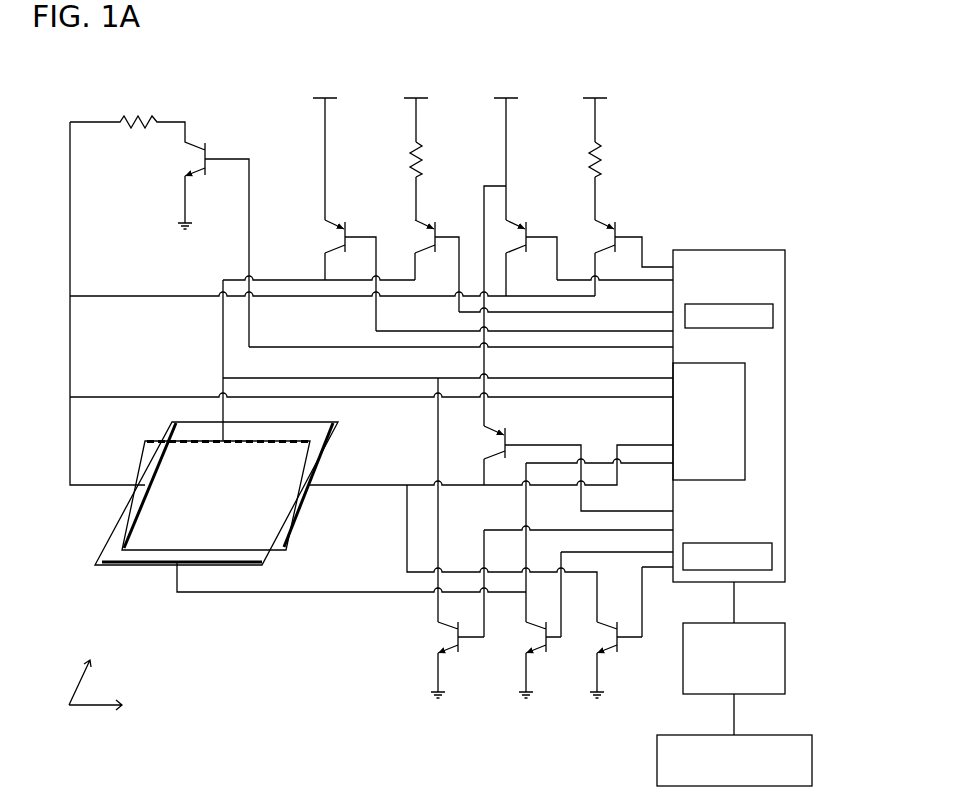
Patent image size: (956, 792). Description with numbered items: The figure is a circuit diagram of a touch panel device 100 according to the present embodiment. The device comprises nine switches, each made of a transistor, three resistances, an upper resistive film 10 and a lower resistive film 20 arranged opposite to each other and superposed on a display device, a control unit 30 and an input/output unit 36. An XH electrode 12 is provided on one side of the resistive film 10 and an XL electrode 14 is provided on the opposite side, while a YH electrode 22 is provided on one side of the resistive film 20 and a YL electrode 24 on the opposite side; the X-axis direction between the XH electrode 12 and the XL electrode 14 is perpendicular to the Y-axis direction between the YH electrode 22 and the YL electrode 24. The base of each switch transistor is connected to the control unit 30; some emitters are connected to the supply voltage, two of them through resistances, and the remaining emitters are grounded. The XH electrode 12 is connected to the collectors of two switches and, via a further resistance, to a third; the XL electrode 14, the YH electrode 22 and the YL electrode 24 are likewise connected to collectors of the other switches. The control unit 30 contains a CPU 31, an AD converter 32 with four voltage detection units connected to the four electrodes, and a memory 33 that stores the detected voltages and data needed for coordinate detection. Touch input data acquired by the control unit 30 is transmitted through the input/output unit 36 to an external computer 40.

The touch panel device 100 is at (653, 83).
The resistive film 10 is at (152, 550).
The XH electrode 12 is at (126, 533).
The XL electrode 14 is at (292, 527).
The resistive film 20 is at (122, 513).
The YH electrode 22 is at (150, 441).
The YL electrode 24 is at (130, 567).
The control unit 30 is at (785, 265).
The CPU 31 is at (773, 316).
The AD converter 32 is at (745, 410).
The memory 33 is at (772, 555).
The input/output unit 36 is at (785, 660).
The computer 40 is at (812, 760).